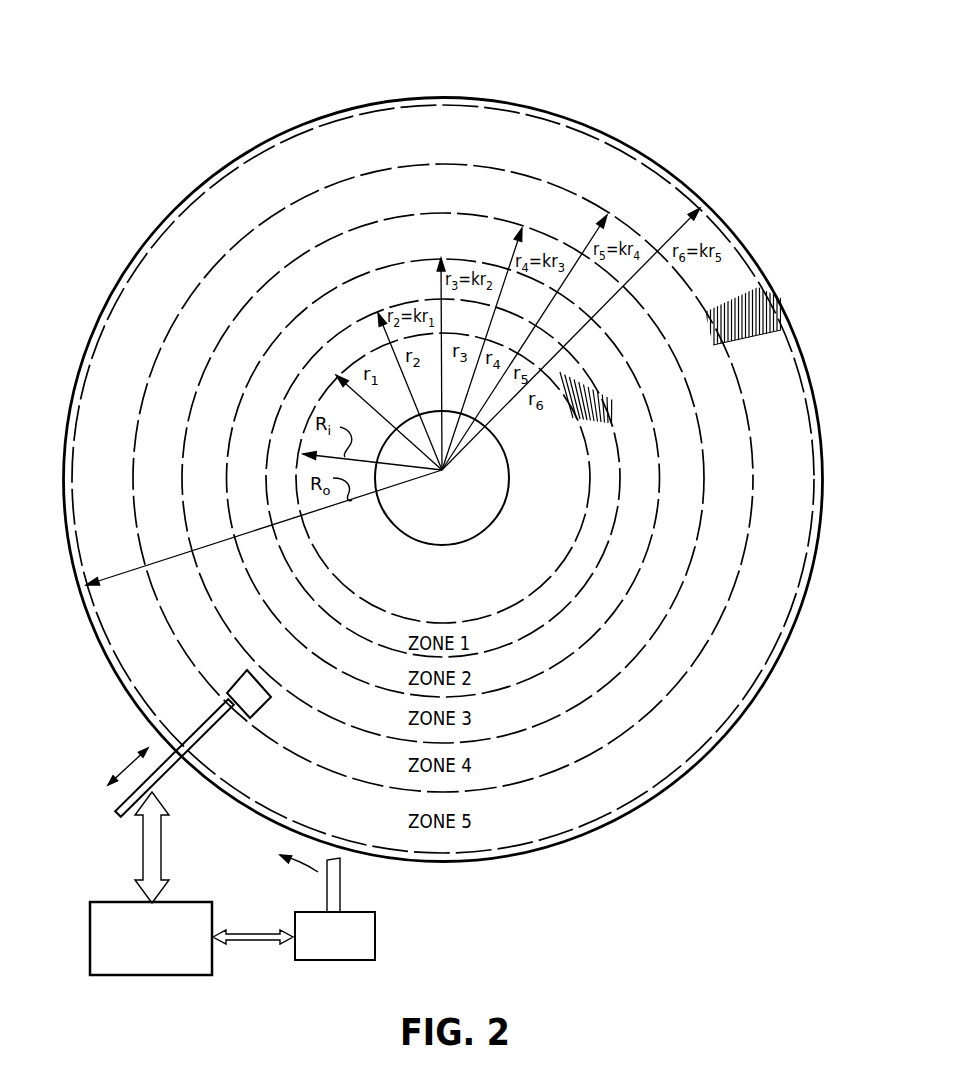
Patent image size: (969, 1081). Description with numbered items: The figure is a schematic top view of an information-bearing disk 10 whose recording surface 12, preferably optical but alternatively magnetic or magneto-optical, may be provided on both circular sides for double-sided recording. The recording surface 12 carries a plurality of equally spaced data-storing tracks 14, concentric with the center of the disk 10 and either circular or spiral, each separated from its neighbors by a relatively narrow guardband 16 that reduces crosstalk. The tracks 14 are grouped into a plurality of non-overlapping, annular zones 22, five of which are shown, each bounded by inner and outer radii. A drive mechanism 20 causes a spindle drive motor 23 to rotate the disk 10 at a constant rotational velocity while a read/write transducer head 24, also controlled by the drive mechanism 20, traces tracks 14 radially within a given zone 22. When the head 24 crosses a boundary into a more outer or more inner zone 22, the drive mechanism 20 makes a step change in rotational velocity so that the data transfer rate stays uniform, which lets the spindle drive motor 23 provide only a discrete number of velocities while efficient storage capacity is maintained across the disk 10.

The information-bearing disk 10 is at (688, 132).
The recording surface 12 is at (741, 283).
The data-storing tracks 14 is at (763, 310).
The guardband 16 is at (762, 322).
The drive mechanism 20 is at (200, 912).
The annular zones 22 is at (600, 660).
The spindle drive motor 23 is at (375, 930).
The read/write transducer head 24 is at (252, 698).